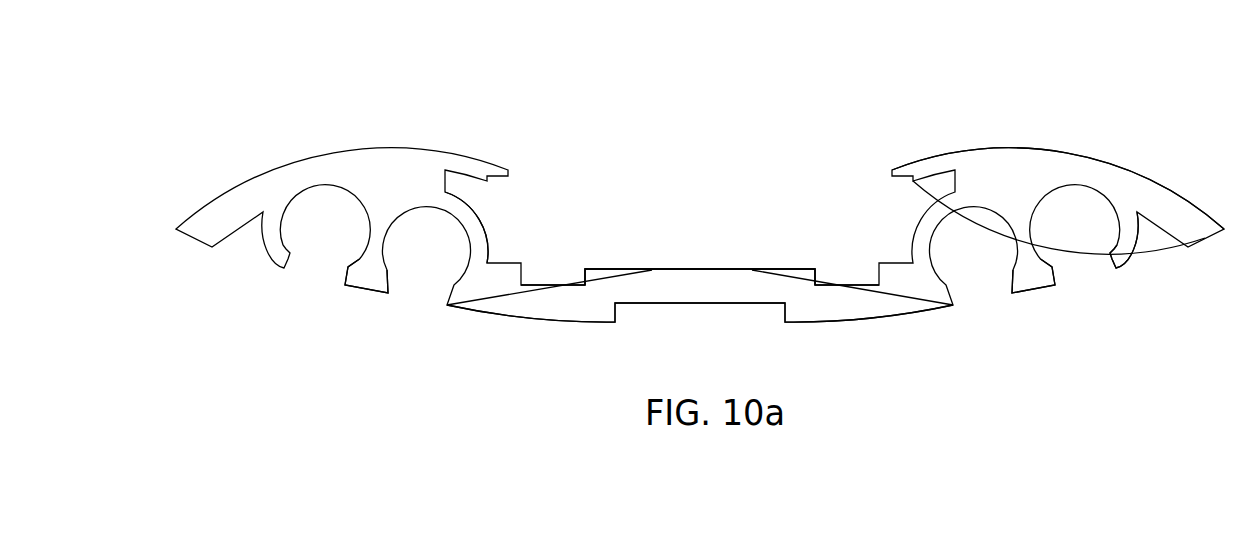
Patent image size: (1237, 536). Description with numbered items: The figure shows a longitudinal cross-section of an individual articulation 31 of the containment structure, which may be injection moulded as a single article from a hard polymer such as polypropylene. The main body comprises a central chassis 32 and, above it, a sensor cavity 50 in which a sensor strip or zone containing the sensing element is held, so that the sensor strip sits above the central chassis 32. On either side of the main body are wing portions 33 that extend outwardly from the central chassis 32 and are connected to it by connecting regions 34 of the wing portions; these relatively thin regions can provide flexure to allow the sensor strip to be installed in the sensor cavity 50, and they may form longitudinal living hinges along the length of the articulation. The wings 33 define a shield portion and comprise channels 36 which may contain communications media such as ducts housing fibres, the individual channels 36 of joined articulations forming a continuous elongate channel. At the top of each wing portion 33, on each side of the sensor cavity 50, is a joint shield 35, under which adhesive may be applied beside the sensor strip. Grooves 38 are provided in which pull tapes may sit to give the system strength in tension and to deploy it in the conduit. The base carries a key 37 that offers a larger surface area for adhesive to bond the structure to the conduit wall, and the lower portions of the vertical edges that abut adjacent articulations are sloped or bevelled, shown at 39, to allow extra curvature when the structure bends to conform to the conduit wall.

The articulation 31 is at (478, 113).
The central chassis 32 is at (713, 282).
The wing portions 33 is at (368, 335).
The connecting regions 34 is at (480, 217).
The joint shields 35 is at (1030, 163).
The channels 36 is at (1121, 229).
The key 37 is at (1032, 273).
The grooves 38 is at (547, 282).
The bevelled edge 39 is at (810, 310).
The sensor cavity 50 is at (670, 202).